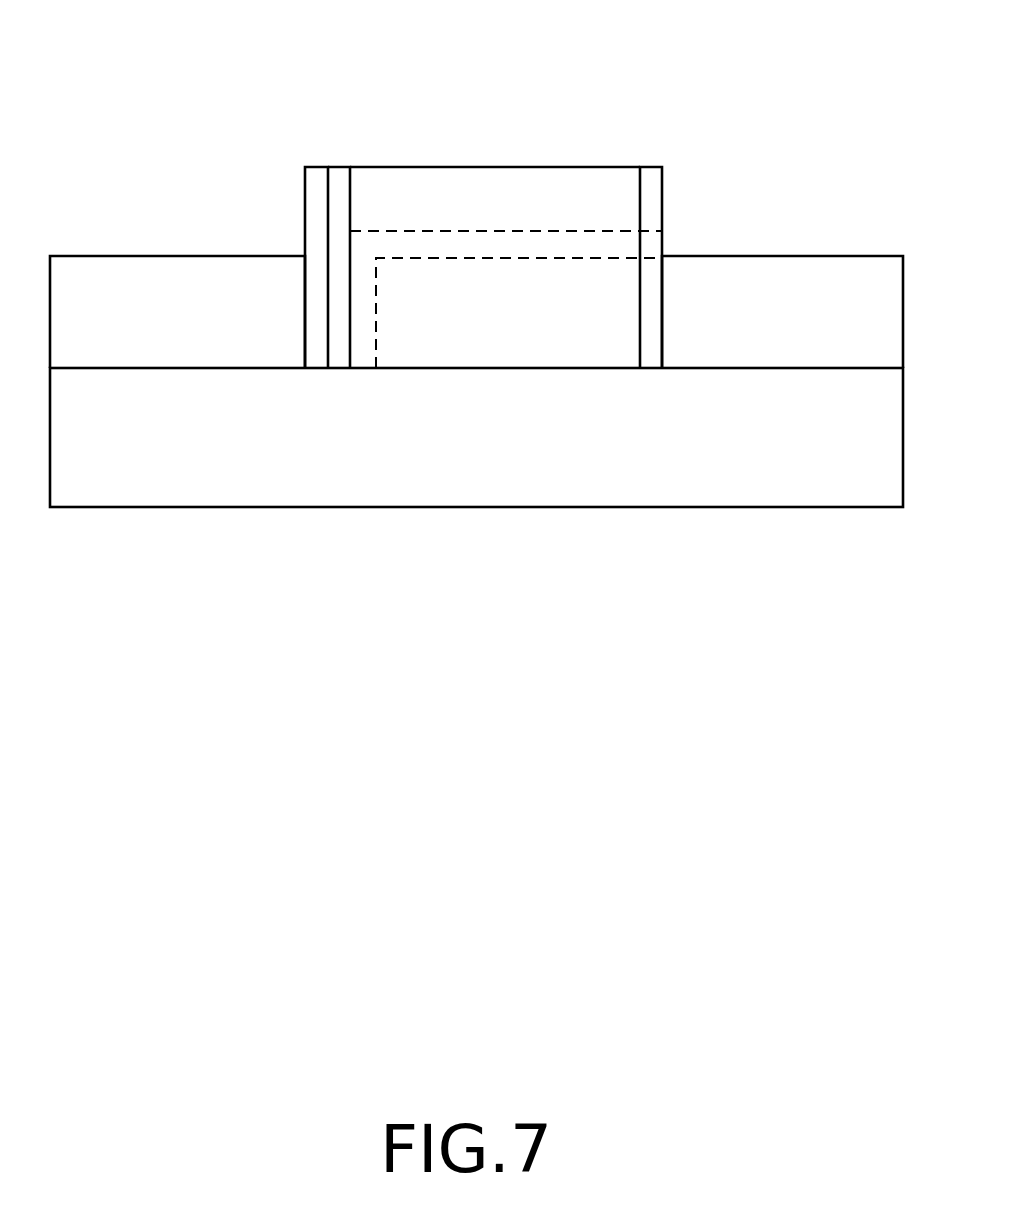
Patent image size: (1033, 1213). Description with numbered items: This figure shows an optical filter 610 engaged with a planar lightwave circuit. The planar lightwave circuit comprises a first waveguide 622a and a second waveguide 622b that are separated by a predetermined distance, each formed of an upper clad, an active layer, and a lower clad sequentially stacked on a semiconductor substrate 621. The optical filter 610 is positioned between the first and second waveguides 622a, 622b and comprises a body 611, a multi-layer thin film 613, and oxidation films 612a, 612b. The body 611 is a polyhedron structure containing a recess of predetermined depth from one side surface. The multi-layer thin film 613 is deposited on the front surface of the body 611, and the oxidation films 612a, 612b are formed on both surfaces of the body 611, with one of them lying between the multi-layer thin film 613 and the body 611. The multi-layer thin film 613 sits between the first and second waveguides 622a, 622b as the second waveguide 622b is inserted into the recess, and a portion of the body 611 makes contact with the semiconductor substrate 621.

The optical filter 610 is at (481, 191).
The body 611 is at (483, 190).
The oxidation film 612a is at (340, 180).
The oxidation film 612b is at (653, 180).
The multi-layer thin film 613 is at (319, 178).
The semiconductor substrate 621 is at (485, 473).
The first waveguide 622a is at (180, 268).
The second waveguide 622b is at (757, 273).